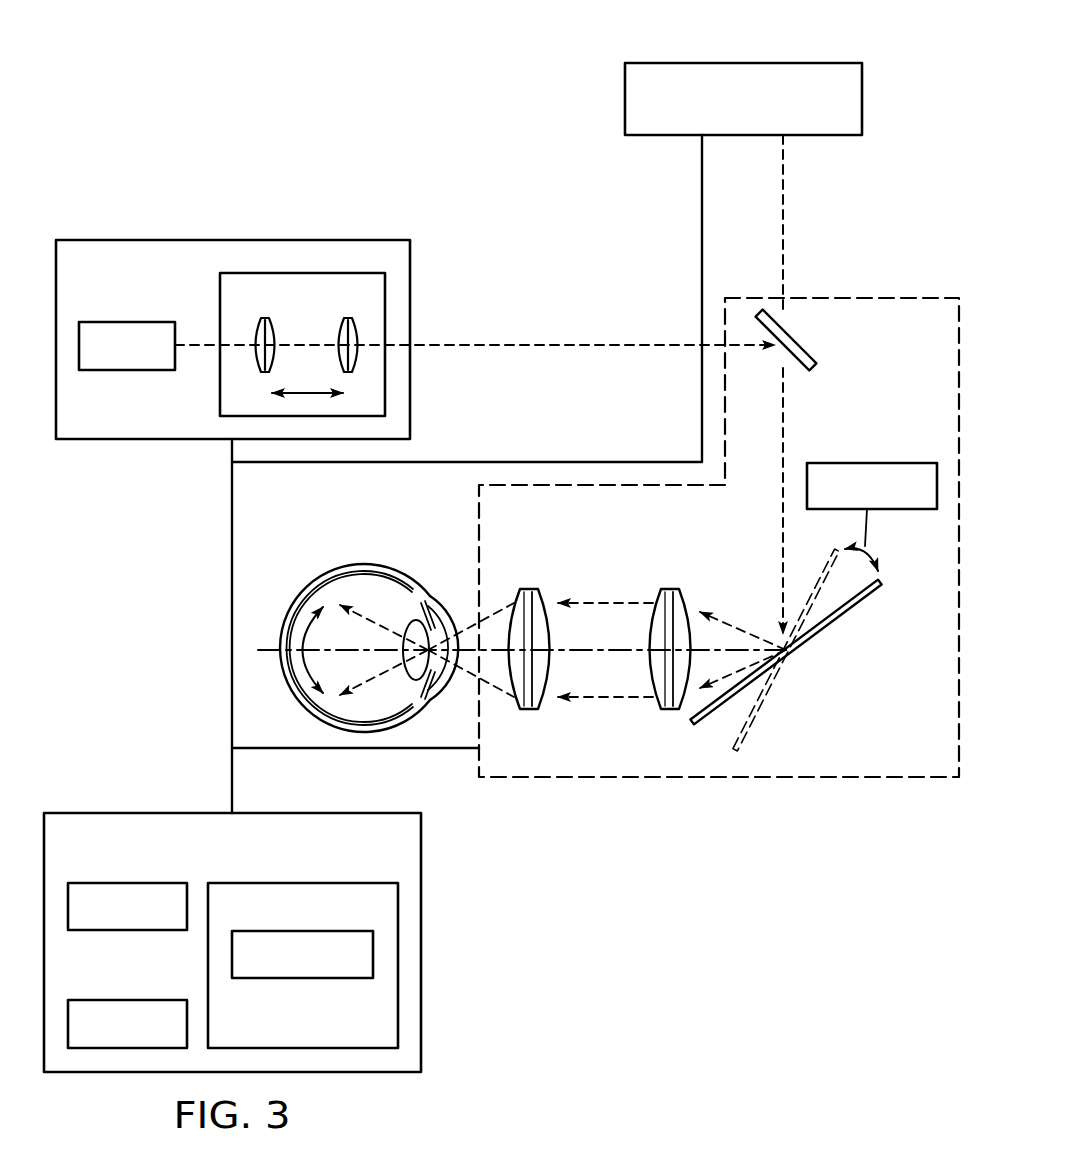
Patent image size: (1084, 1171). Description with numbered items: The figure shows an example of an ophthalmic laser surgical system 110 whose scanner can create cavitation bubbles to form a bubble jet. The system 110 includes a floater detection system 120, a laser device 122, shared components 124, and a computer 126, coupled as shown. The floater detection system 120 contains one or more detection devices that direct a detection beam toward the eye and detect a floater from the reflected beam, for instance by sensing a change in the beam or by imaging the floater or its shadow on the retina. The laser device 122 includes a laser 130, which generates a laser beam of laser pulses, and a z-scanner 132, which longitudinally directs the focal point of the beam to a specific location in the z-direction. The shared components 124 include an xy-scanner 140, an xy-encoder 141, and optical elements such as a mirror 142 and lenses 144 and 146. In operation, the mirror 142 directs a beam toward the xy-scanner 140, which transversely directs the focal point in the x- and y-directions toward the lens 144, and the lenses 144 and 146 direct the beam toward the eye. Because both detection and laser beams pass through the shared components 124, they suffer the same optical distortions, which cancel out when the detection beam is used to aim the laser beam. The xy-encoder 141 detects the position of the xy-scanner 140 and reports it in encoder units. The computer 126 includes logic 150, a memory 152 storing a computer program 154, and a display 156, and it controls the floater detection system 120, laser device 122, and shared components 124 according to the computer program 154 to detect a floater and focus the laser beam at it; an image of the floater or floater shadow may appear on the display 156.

The ophthalmic laser surgical system 110 is at (135, 107).
The floater detection system 120 is at (742, 63).
The laser device 122 is at (231, 239).
The shared components 124 is at (706, 781).
The computer 126 is at (426, 947).
The laser 130 is at (128, 322).
The z-scanner 132 is at (220, 311).
The xy-scanner 140 is at (800, 680).
The xy-encoder 141 is at (895, 463).
The mirror 142 is at (805, 343).
The lens 144 is at (671, 589).
The lens 146 is at (530, 589).
The logic 150 is at (150, 930).
The memory 152 is at (325, 883).
The computer program 154 is at (303, 978).
The display 156 is at (104, 1000).